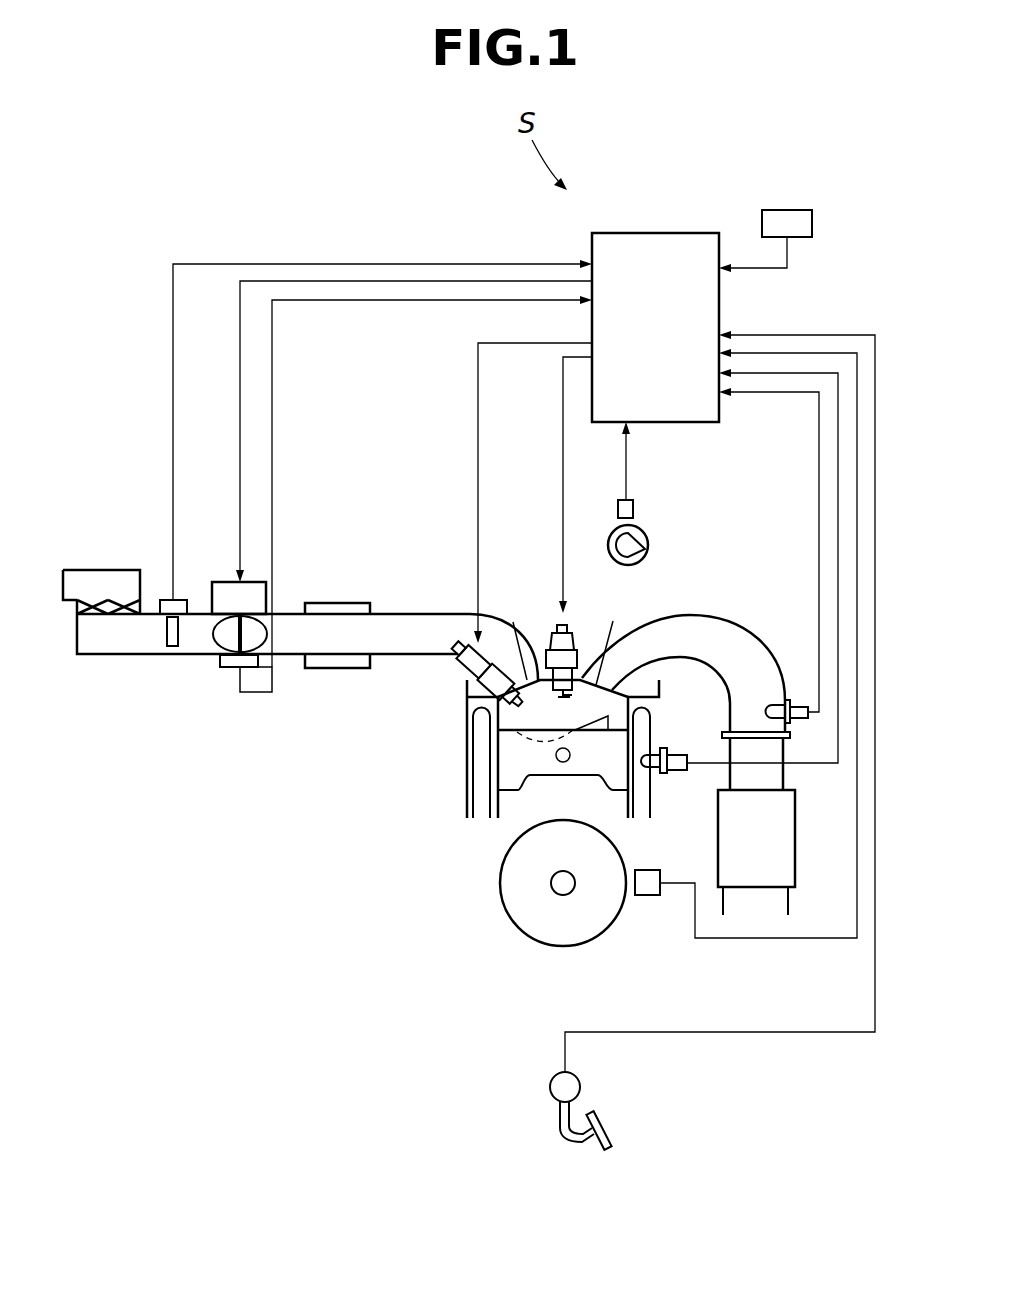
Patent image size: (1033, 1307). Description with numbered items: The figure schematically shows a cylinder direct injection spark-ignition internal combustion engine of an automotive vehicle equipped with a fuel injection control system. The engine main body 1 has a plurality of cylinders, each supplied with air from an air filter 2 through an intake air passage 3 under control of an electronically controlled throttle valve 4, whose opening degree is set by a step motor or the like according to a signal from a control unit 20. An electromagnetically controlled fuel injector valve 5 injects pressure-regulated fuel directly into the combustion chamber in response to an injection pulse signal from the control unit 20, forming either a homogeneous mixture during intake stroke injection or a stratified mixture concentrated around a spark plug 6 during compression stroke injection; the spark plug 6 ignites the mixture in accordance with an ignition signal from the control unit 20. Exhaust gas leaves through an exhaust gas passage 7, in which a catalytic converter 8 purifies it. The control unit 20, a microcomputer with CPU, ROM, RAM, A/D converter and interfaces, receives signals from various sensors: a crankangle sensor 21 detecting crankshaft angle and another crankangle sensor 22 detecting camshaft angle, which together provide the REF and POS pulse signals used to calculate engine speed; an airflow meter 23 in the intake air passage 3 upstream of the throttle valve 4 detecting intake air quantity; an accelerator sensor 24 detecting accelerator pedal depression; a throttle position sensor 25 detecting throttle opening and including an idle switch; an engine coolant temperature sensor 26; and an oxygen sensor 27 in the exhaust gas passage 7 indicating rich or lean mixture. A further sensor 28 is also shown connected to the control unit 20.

The engine main body 1 is at (446, 786).
The air filter 2 is at (100, 570).
The intake air passage 3 is at (138, 650).
The electronically controlled throttle valve 4 is at (223, 583).
The fuel injector valve 5 is at (467, 660).
The spark plug 6 is at (557, 630).
The exhaust gas passage 7 is at (732, 642).
The catalytic converter 8 is at (785, 835).
The control unit 20 is at (613, 233).
The crankangle sensor 21 is at (647, 897).
The crankangle sensor 22 is at (635, 510).
The airflow meter 23 is at (173, 655).
The accelerator sensor 24 is at (550, 1085).
The throttle position sensor 25 is at (230, 668).
The engine coolant temperature sensor 26 is at (678, 772).
The oxygen sensor 27 is at (800, 700).
The vehicle speed sensor 28 is at (762, 215).